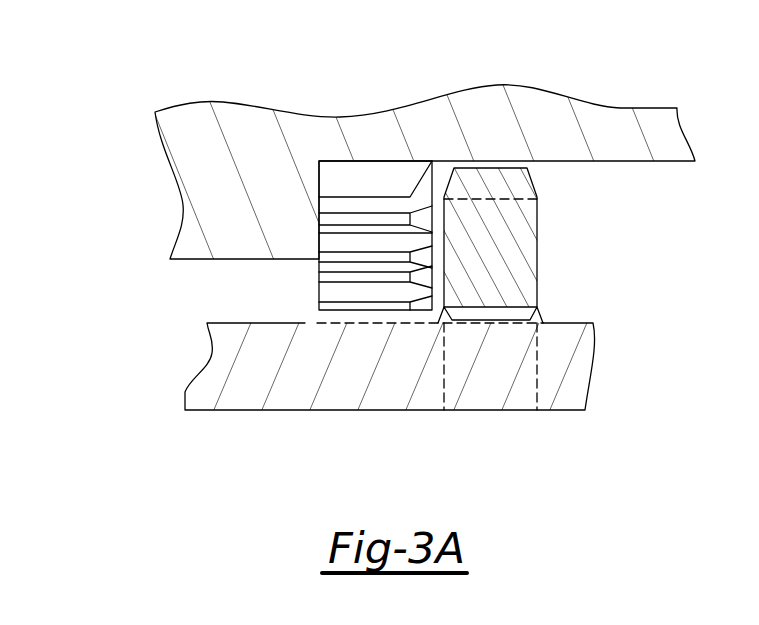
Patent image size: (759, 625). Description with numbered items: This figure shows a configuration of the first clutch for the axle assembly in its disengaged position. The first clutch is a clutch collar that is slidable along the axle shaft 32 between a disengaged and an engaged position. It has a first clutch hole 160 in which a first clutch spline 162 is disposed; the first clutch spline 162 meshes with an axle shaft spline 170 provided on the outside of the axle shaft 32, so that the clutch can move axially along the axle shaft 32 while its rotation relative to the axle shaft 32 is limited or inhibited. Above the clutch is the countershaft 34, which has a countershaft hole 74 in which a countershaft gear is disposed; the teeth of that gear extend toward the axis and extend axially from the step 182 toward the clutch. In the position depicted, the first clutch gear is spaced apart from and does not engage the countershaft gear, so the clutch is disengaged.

The countershaft 34 is at (202, 118).
The step 182 is at (318, 185).
The axle shaft spline 170 is at (320, 311).
The first clutch spline 162 is at (496, 321).
The first clutch hole 160 is at (470, 306).
The axle shaft 32 is at (258, 388).
The countershaft hole 74 is at (262, 288).